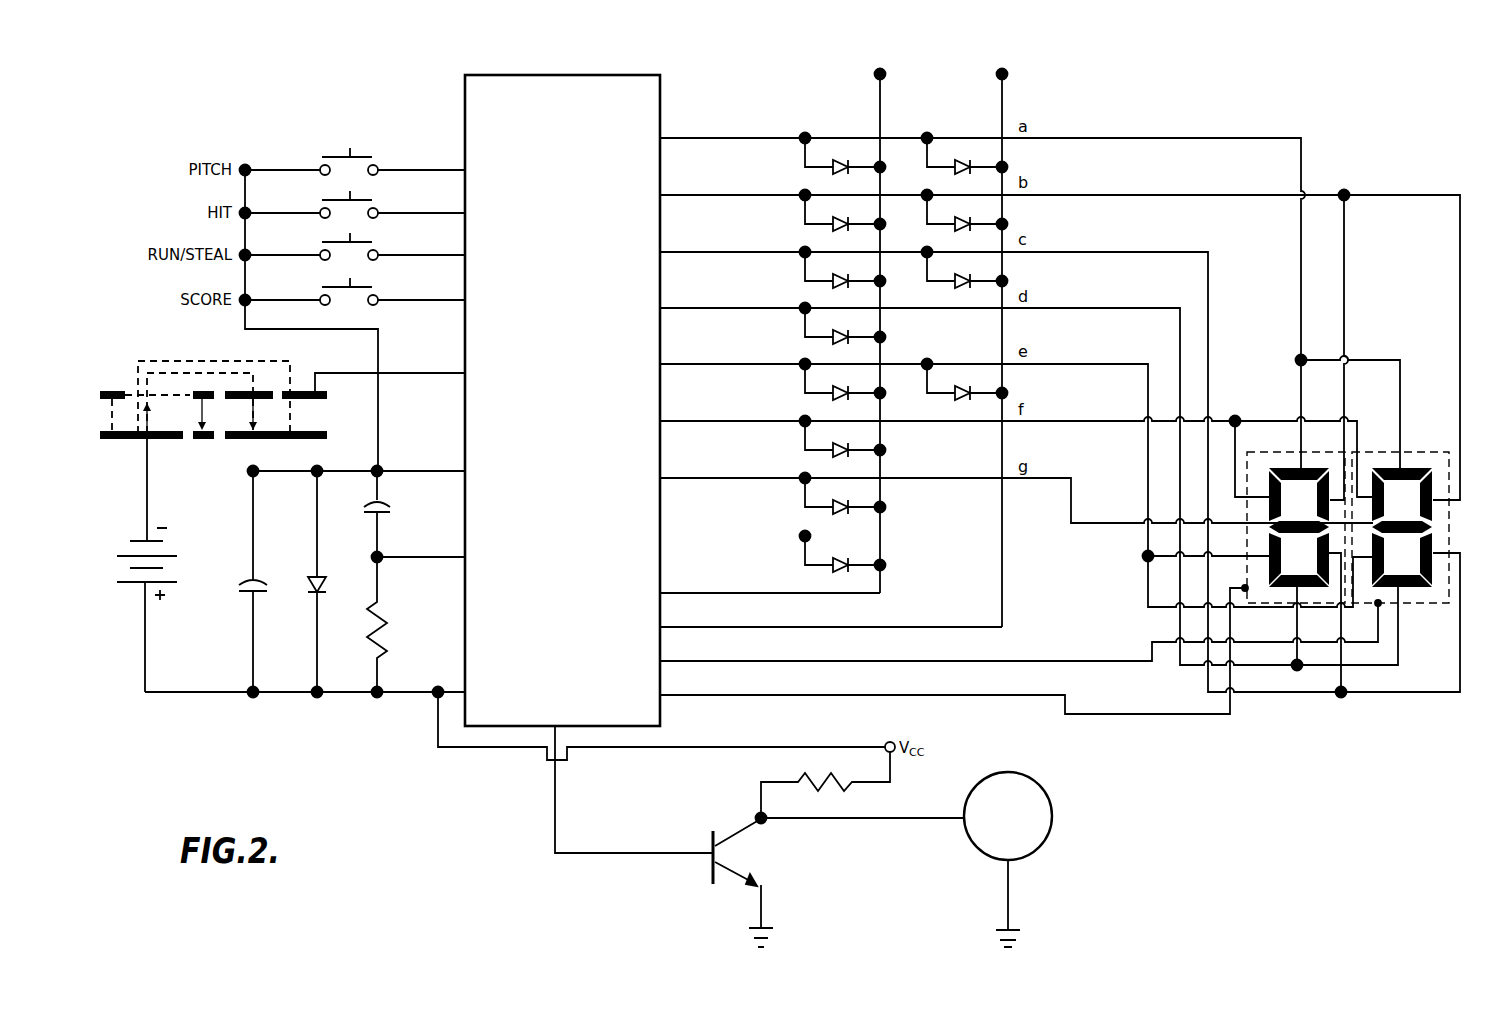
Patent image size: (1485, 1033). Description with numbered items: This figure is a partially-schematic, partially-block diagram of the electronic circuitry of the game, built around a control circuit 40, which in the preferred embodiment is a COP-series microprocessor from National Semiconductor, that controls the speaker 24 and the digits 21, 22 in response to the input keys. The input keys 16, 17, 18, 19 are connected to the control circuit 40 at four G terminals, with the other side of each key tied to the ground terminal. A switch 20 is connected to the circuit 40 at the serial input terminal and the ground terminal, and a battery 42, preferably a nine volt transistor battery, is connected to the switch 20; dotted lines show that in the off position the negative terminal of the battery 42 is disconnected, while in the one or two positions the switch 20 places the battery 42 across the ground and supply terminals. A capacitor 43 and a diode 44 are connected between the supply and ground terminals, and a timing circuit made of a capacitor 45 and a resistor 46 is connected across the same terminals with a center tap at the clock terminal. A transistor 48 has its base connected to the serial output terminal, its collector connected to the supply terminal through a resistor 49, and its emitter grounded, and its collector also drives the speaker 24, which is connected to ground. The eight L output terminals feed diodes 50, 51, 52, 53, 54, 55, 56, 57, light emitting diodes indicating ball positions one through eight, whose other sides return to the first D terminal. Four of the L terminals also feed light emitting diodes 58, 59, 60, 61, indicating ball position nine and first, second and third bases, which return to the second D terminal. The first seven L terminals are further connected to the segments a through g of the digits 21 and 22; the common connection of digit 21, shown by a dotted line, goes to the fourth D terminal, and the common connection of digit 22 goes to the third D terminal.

The input key 16 is at (364, 157).
The input key 17 is at (362, 200).
The input key 18 is at (362, 242).
The input key 19 is at (362, 287).
The switch 20 is at (183, 361).
The digit 21 is at (1293, 493).
The digit 22 is at (1404, 495).
The speaker 24 is at (1045, 845).
The control circuit 40 is at (600, 697).
The battery 42 is at (145, 583).
The capacitor 43 is at (250, 580).
The diode 44 is at (314, 579).
The capacitor 45 is at (388, 512).
The resistor 46 is at (388, 627).
The transistor 48 is at (732, 832).
The resistor 49 is at (838, 795).
The diode 50 is at (831, 168).
The diode 51 is at (831, 225).
The diode 52 is at (831, 282).
The diode 53 is at (831, 338).
The diode 54 is at (831, 394).
The diode 55 is at (831, 451).
The diode 56 is at (831, 508).
The diode 57 is at (831, 566).
The light emitting diode 58 is at (953, 168).
The light emitting diode 59 is at (953, 225).
The light emitting diode 60 is at (953, 282).
The light emitting diode 61 is at (953, 394).